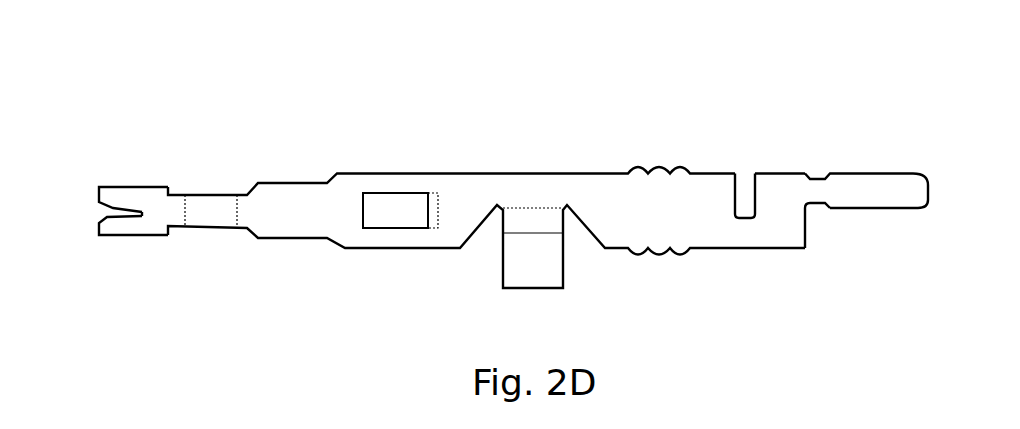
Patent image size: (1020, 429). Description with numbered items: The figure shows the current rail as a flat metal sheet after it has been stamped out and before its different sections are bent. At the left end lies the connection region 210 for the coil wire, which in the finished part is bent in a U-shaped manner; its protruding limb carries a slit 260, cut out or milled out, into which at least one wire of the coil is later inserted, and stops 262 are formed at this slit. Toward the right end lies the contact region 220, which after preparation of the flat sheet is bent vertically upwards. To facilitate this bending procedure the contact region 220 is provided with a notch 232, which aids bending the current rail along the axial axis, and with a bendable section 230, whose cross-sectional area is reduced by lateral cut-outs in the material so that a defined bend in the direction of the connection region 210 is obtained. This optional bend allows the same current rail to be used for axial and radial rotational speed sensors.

The connection region 210 is at (123, 132).
The contact region 220 is at (855, 128).
The bendable section 230 is at (818, 218).
The notch 232 is at (746, 176).
The slit 260 is at (140, 213).
The stops 262 is at (120, 205).